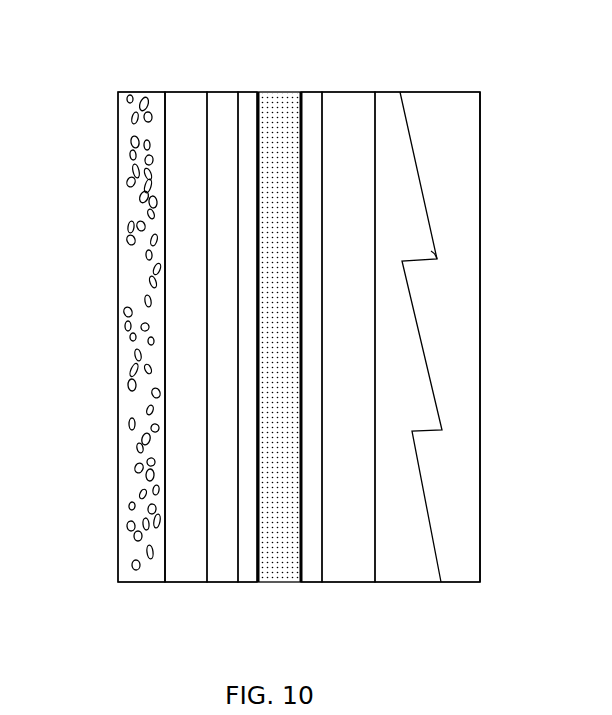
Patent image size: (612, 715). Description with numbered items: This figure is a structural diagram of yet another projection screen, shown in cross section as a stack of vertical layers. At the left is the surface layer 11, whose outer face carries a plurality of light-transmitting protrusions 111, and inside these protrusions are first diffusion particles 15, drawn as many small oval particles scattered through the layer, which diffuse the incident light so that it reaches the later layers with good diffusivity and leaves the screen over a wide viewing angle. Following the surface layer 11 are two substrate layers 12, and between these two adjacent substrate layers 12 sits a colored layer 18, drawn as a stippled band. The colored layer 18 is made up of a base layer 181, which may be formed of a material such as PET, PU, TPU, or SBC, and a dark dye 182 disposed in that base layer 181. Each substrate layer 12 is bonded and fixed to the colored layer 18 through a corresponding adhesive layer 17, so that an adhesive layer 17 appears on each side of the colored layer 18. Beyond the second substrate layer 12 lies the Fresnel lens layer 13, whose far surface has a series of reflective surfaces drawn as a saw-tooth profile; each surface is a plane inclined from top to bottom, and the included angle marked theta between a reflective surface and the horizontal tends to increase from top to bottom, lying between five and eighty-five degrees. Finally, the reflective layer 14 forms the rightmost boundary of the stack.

The surface layer 11 is at (182, 565).
The light-transmitting protrusions 111 is at (155, 565).
The substrate layer 12 is at (219, 570).
The Fresnel lens layer 13 is at (418, 570).
The reflective layer 14 is at (468, 562).
The first diffusion particle 15 is at (124, 452).
The adhesive layer 17 is at (248, 575).
The colored layer 18 is at (282, 294).
The base layer 181 is at (258, 150).
The dark dye 182 is at (276, 182).